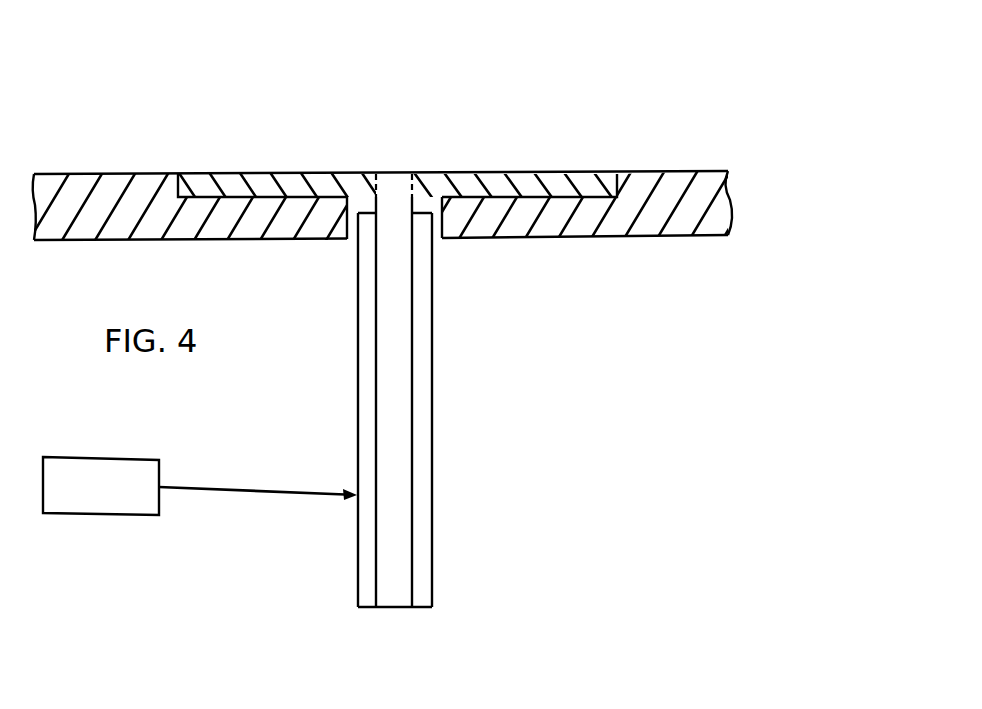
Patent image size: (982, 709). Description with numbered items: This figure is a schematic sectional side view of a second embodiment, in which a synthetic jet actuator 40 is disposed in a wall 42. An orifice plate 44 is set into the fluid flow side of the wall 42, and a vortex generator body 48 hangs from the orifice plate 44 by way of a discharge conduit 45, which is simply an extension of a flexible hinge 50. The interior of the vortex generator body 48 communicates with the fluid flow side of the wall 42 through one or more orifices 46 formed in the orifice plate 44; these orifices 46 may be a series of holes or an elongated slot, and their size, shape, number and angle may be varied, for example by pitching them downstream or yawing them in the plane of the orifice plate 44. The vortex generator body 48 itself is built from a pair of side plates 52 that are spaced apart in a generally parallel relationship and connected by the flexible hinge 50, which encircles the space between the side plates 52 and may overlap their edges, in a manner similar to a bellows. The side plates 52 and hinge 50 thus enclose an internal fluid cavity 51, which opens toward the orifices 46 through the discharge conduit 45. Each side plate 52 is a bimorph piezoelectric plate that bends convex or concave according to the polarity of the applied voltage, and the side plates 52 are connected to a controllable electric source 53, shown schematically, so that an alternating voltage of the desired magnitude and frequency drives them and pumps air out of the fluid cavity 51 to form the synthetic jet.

The synthetic jet actuator 40 is at (653, 53).
The wall 42 is at (707, 207).
The orifice plate 44 is at (560, 182).
The discharge conduit 45 is at (375, 202).
The orifices 46 is at (406, 188).
The vortex generator body 48 is at (447, 351).
The flexible hinge 50 is at (402, 590).
The fluid cavity 51 is at (393, 438).
The side plates 52 is at (368, 563).
The controllable electric source 53 is at (100, 501).